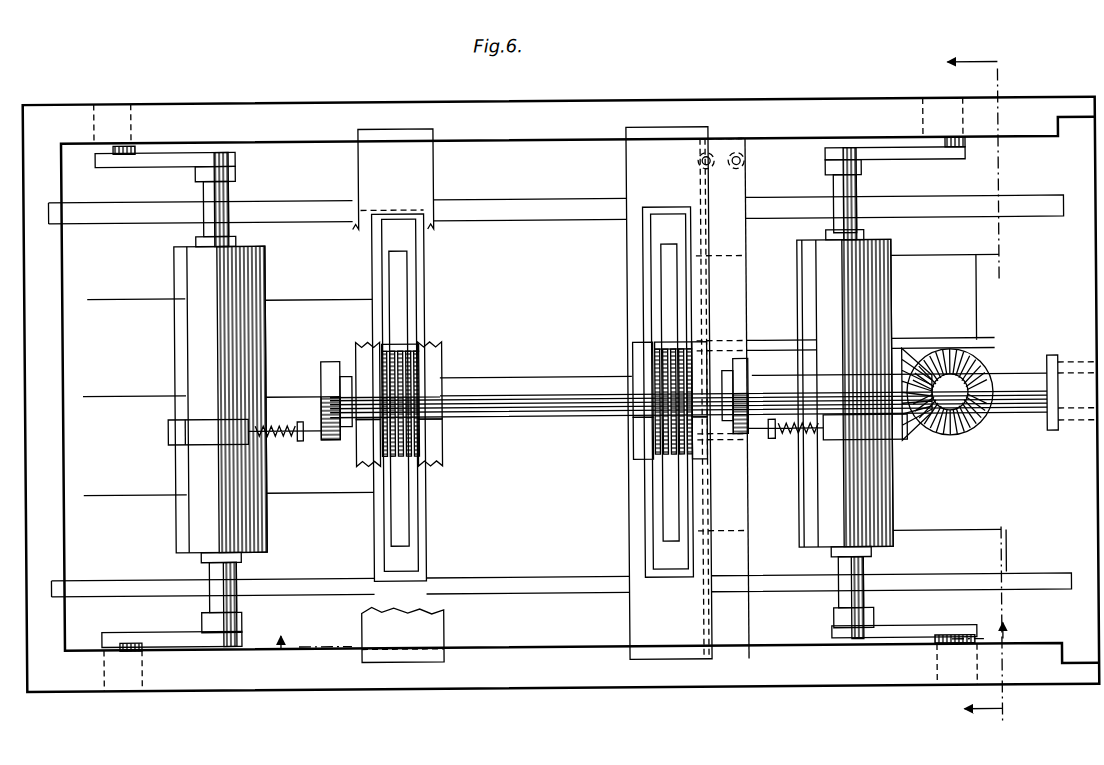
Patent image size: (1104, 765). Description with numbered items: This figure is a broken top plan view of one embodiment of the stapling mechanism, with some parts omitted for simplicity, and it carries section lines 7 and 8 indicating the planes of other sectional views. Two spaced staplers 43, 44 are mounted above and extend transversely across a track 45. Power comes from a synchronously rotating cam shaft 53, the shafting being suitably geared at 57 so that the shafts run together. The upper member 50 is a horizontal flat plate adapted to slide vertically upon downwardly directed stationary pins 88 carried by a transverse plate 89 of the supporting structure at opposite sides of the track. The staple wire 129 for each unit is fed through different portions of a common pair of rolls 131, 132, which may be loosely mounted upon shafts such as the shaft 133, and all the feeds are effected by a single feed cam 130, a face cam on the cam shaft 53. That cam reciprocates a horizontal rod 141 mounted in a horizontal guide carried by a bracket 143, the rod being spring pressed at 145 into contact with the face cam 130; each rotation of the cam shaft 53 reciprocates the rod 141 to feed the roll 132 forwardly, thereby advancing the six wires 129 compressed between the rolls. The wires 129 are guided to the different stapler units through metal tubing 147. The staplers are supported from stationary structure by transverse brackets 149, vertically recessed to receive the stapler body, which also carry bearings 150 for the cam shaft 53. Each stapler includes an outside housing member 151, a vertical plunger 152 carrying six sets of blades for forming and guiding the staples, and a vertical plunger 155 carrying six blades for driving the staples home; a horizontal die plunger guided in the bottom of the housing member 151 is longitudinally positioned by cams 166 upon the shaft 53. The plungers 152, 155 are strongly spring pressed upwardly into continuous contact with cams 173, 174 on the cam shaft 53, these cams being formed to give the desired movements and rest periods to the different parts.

The section line 7- 7 is at (642, 640).
The section line 8- 8 is at (982, 387).
The stapler 43 is at (516, 395).
The stapler 44 is at (630, 270).
The track 45 is at (548, 214).
The upper member 50 is at (749, 182).
The cam shaft 53 is at (535, 376).
The gearing 57 is at (950, 440).
The stationary pins 88 is at (716, 160).
The transverse plate 89 is at (740, 242).
The wire 129 is at (97, 297).
The feed cam 130 is at (332, 438).
The roll 131 is at (190, 328).
The roll 132 is at (532, 406).
The shaft 133 is at (230, 190).
The horizontal rod 141 is at (300, 428).
The bracket 143 is at (896, 442).
The spring 145 is at (262, 442).
The metal tubing 147 is at (326, 298).
The transverse brackets 149 is at (442, 445).
The bearings 150 is at (539, 396).
The outside housing member 151 is at (425, 297).
The vertical plunger 152 is at (526, 396).
The vertical plunger 155 is at (398, 260).
The cams 166 is at (410, 346).
The cam 173 is at (416, 456).
The cam 174 is at (396, 456).